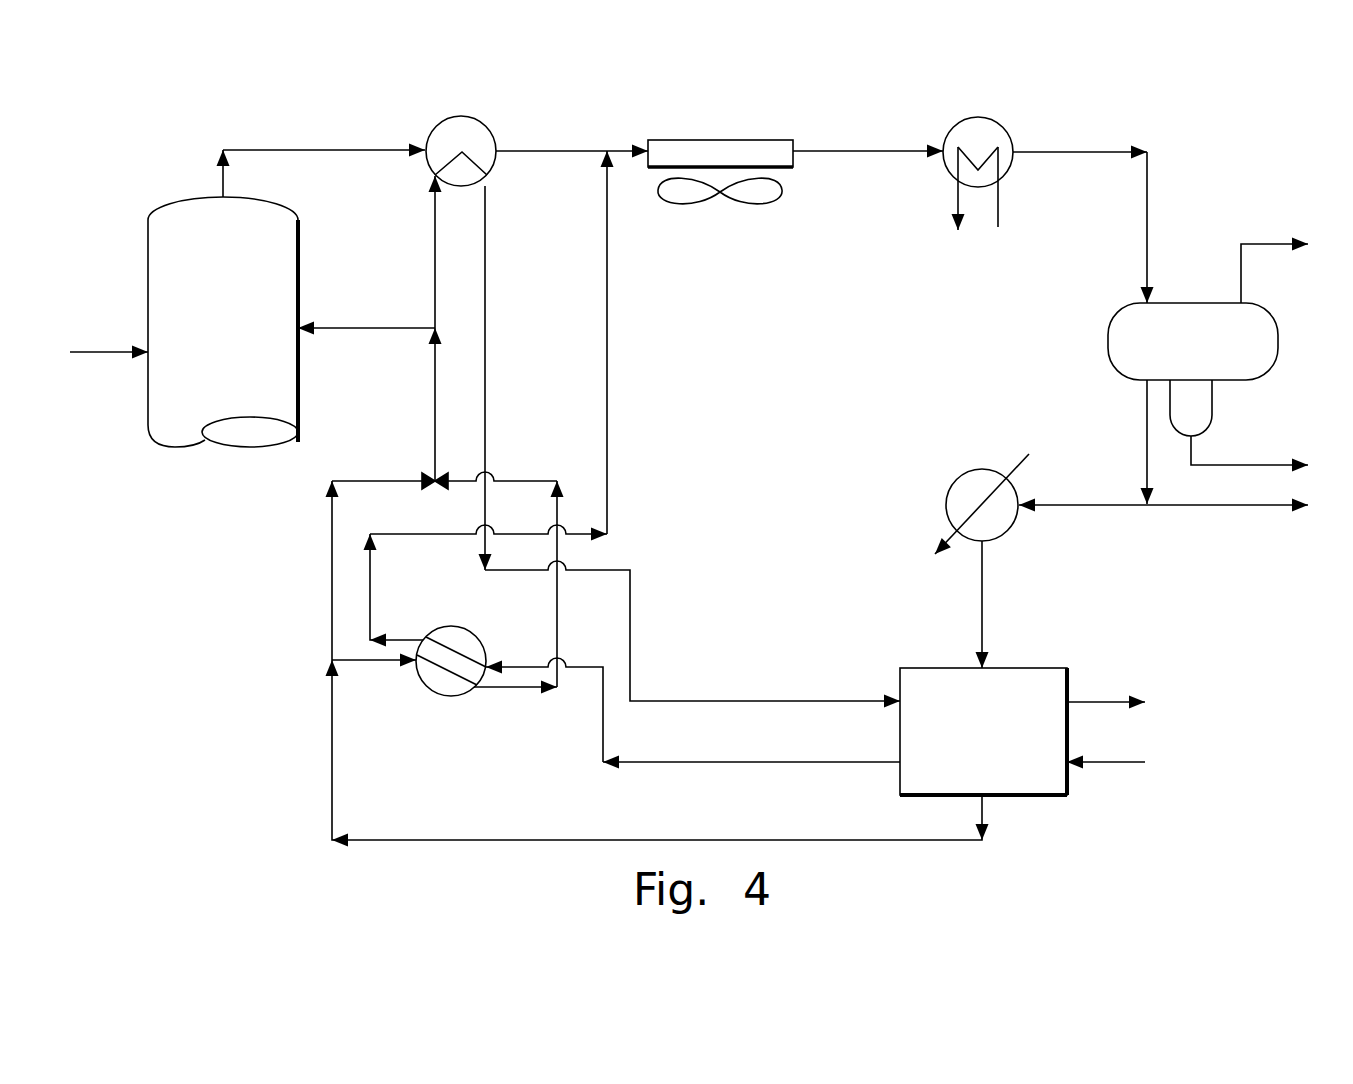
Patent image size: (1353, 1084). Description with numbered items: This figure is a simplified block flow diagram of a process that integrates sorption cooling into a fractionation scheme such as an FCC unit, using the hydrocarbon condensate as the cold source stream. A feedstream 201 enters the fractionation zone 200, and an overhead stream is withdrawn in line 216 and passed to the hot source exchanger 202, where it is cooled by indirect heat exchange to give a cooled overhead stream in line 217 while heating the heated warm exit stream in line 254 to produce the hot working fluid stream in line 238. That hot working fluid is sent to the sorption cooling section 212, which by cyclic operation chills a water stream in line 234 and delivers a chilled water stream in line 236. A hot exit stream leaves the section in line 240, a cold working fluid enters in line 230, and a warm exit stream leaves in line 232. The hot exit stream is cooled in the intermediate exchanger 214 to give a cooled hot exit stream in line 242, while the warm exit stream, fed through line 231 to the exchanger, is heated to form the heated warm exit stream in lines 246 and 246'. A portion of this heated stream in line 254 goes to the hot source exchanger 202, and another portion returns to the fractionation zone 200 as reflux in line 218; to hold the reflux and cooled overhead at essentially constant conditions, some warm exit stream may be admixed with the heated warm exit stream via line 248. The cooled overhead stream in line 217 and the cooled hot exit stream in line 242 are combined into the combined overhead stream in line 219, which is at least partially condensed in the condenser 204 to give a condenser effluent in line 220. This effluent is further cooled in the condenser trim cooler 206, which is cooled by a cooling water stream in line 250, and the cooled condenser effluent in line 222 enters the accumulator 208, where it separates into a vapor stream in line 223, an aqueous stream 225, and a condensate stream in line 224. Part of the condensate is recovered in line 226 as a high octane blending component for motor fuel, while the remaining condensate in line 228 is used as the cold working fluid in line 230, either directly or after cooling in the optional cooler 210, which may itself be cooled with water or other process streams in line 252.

The fractionation zone 200 is at (247, 303).
The feed stream 201 is at (110, 352).
The hot source exchanger 202 is at (462, 116).
The condenser 204 is at (716, 140).
The condenser trim cooler 206 is at (1000, 120).
The accumulator 208 is at (1222, 361).
The optional cooler 210 is at (946, 500).
The sorption cooling section 212 is at (1006, 749).
The intermediate exchanger 214 is at (441, 696).
The overhead stream line 216 is at (338, 150).
The cooled overhead stream line 217 is at (551, 153).
The reflux stream line 218 is at (366, 328).
The combined overhead stream line 219 is at (617, 151).
The condenser effluent stream line 220 is at (856, 151).
The cooled condenser effluent stream line 222 is at (1148, 199).
The vapor stream line 223 is at (1268, 244).
The condensate stream line 224 is at (1147, 421).
The aqueous stream 225 is at (1242, 465).
The blending component line 226 is at (1248, 505).
The remaining condensate line 228 is at (1108, 506).
The cold working fluid stream line 230 is at (984, 603).
The pump inlet conduit 231 is at (370, 660).
The warm exit stream line 232 is at (984, 823).
The water stream line 234 is at (1120, 762).
The chilled water stream line 236 is at (1104, 702).
The hot working fluid stream line 238 is at (487, 281).
The hot exit stream line 240 is at (771, 764).
The cooled hot exit stream line 242 is at (606, 357).
The heated warm exit stream line 246 is at (546, 587).
The heated warm exit stream line 246' is at (405, 332).
The admixing line 248 is at (332, 578).
The cooling water stream line 250 is at (999, 205).
The cooling stream line 252 is at (1016, 465).
The heated warm exit stream line 254 is at (435, 240).